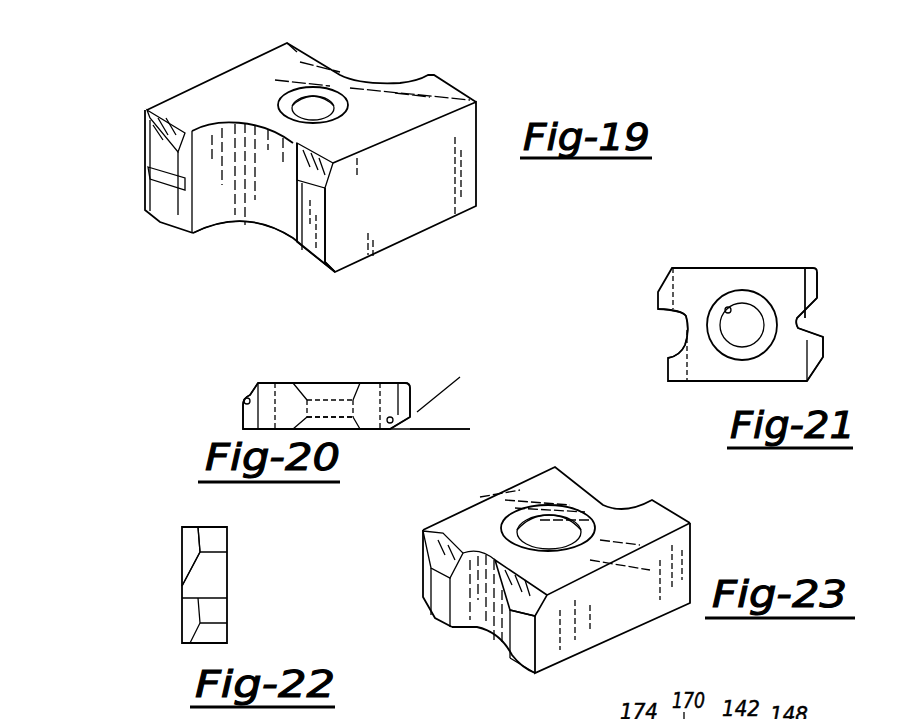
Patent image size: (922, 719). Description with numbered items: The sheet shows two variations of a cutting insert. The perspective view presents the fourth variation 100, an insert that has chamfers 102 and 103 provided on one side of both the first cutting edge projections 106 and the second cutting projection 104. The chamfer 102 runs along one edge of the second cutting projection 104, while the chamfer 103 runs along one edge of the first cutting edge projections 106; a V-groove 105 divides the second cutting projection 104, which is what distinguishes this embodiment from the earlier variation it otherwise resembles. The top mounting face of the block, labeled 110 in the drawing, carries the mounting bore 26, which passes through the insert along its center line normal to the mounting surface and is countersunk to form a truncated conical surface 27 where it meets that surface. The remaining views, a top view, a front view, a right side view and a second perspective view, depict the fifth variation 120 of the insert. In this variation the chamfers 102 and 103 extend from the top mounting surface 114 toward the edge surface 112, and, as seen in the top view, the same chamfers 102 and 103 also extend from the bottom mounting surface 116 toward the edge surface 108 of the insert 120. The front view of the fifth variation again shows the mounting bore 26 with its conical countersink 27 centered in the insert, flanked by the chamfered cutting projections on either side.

In FIG. 19, the fourth variation of the cutting insert 100 is at (465, 226).
In FIG. 19, the chamfer 102 is at (162, 132).
In FIG. 20, the chamfer 102 is at (253, 393).
In FIG. 21, the chamfer 102 is at (811, 372).
In FIG. 22, the chamfer 102 is at (192, 617).
In FIG. 23, the chamfer 102 is at (421, 538).
In FIG. 19, the chamfer 103 is at (322, 173).
In FIG. 20, the chamfer 103 is at (246, 400).
In FIG. 21, the chamfer 103 is at (807, 272).
In FIG. 22, the chamfer 103 is at (188, 548).
In FIG. 23, the chamfer 103 is at (534, 602).
In FIG. 19, the second cutting projection 104 is at (170, 160).
In FIG. 20, the second cutting projection 104 is at (446, 384).
In FIG. 21, the second cutting projection 104 is at (824, 350).
In FIG. 22, the second cutting projection 104 is at (210, 613).
In FIG. 23, the second cutting projection 104 is at (442, 603).
In FIG. 19, the V-groove 105 is at (168, 188).
In FIG. 19, the first cutting edge projections 106 is at (313, 245).
In FIG. 20, the first cutting edge projections 106 is at (412, 395).
In FIG. 21, the first cutting edge projections 106 is at (815, 282).
In FIG. 22, the first cutting edge projections 106 is at (210, 542).
In FIG. 23, the first cutting edge projections 106 is at (520, 652).
In FIG. 19, the edge surface 108 is at (242, 237).
In FIG. 20, the edge surface 108 is at (462, 412).
In FIG. 21, the edge surface 108 is at (824, 318).
In FIG. 23, the edge surface 108 is at (620, 499).
In FIG. 19, the top face 110 is at (425, 107).
In FIG. 19, the edge surface 112 is at (378, 56).
In FIG. 20, the edge surface 112 is at (222, 412).
In FIG. 21, the edge surface 112 is at (668, 327).
In FIG. 23, the edge surface 112 is at (475, 631).
In FIG. 20, the top mounting surface 114 is at (314, 383).
In FIG. 21, the top mounting surface 114 is at (703, 368).
In FIG. 22, the top mounting surface 114 is at (185, 590).
In FIG. 20, the bottom mounting surface 116 is at (353, 430).
In FIG. 22, the bottom mounting surface 116 is at (223, 577).
In FIG. 20, the fifth variation of the cutting insert 120 is at (280, 382).
In FIG. 21, the fifth variation of the cutting insert 120 is at (728, 263).
In FIG. 22, the fifth variation of the cutting insert 120 is at (250, 555).
In FIG. 23, the fifth variation of the cutting insert 120 is at (586, 478).
In FIG. 21, the mounting bore 26 is at (725, 310).
In FIG. 21, the truncated conical surface 27 is at (752, 292).